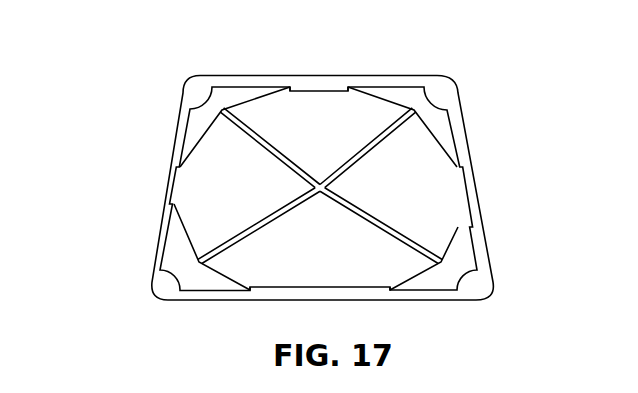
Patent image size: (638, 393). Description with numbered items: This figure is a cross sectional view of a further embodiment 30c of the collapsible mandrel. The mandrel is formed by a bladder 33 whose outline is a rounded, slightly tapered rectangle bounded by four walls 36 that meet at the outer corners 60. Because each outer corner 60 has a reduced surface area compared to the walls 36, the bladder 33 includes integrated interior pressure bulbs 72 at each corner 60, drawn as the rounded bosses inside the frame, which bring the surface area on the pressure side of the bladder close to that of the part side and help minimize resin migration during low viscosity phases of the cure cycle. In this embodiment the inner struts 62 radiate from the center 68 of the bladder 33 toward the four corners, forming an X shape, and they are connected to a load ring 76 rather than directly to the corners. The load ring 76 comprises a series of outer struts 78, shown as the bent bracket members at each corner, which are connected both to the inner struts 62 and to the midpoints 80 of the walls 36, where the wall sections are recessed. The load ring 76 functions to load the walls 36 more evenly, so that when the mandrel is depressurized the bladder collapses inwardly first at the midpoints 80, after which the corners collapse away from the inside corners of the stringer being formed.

The further embodiment of the mandrel 30c is at (170, 79).
The bladder 33 is at (157, 162).
The walls 36 is at (380, 78).
The outer corners 60 is at (449, 79).
The struts 62 is at (372, 213).
The center 68 is at (319, 182).
The pressure bulbs 72 is at (165, 283).
The load ring 76 is at (172, 227).
The outer struts 78 is at (200, 129).
The midpoints 80 is at (312, 78).